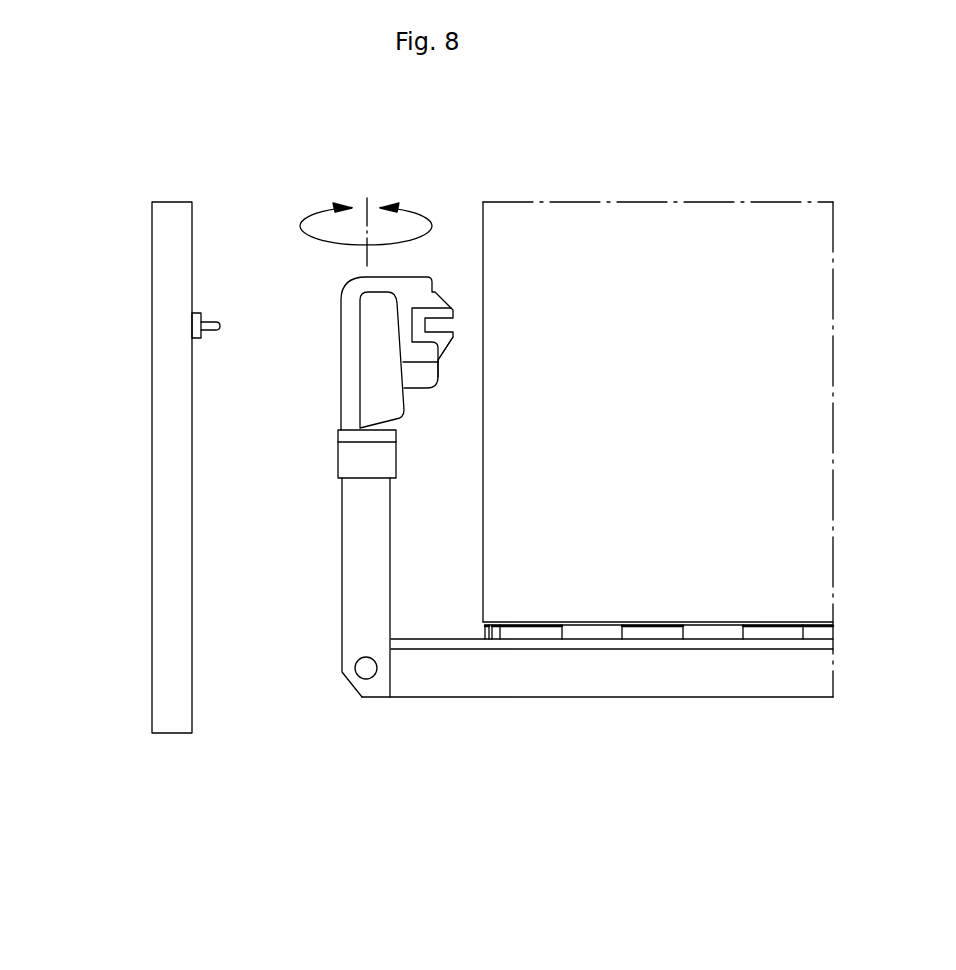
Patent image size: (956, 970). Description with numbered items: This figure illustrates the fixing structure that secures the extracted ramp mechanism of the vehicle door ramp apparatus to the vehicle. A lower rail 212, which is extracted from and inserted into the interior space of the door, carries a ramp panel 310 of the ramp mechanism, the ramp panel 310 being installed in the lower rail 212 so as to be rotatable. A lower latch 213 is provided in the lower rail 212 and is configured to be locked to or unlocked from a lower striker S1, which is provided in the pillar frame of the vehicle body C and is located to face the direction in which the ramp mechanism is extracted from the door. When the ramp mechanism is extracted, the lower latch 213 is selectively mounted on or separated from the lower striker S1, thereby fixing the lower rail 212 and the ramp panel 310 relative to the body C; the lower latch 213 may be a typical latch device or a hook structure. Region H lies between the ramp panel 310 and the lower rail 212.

The ramp panel 310 is at (639, 282).
The lower rail 212 is at (602, 672).
The lower latch 213 is at (378, 372).
The body C is at (165, 543).
The lower striker S1 is at (210, 323).
The support blocks H is at (773, 630).